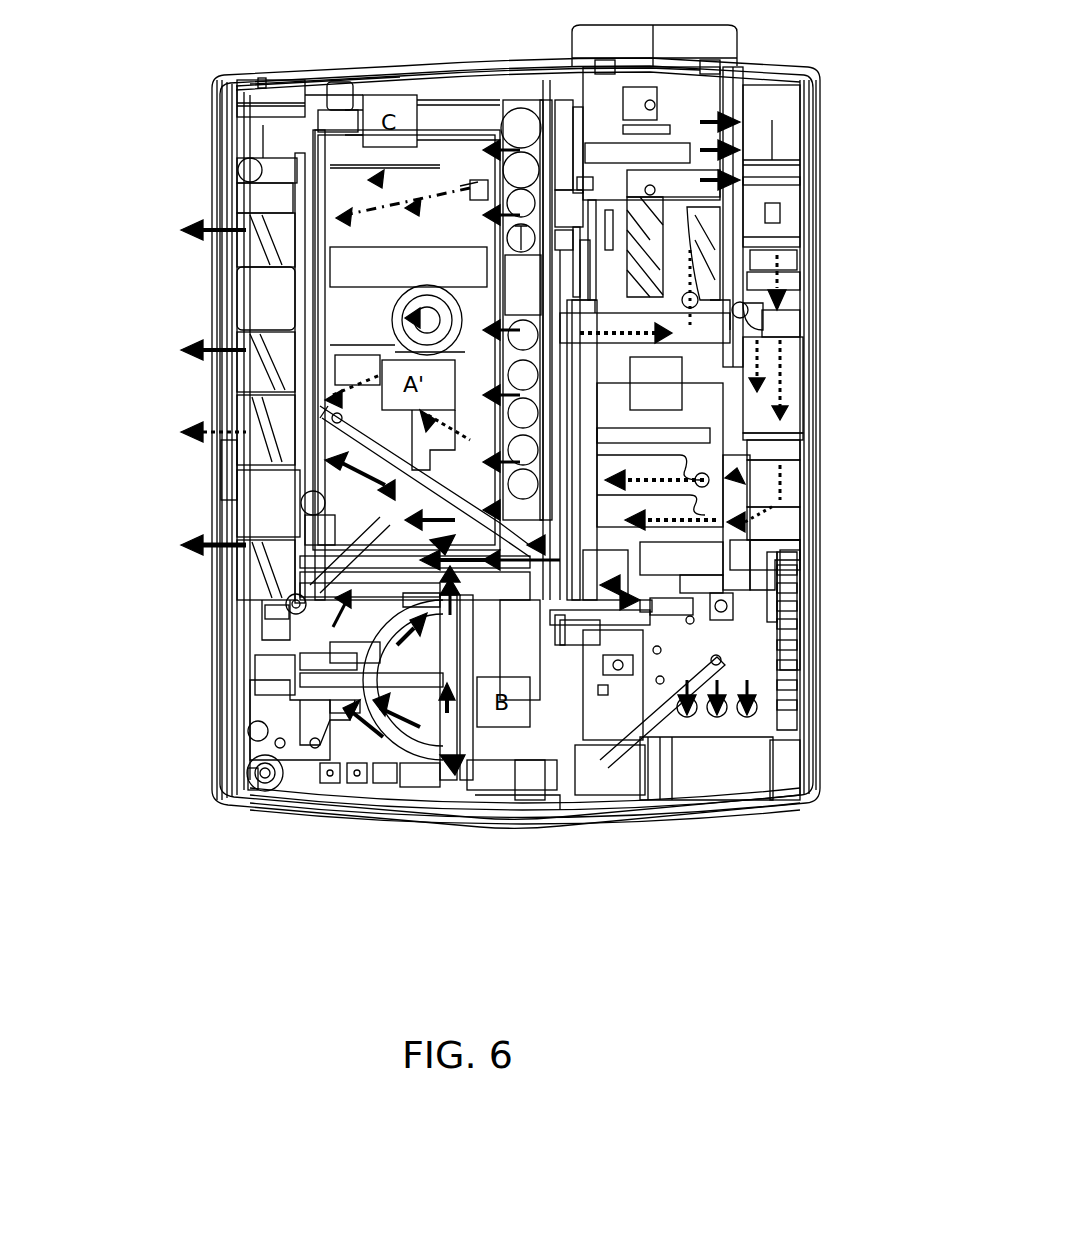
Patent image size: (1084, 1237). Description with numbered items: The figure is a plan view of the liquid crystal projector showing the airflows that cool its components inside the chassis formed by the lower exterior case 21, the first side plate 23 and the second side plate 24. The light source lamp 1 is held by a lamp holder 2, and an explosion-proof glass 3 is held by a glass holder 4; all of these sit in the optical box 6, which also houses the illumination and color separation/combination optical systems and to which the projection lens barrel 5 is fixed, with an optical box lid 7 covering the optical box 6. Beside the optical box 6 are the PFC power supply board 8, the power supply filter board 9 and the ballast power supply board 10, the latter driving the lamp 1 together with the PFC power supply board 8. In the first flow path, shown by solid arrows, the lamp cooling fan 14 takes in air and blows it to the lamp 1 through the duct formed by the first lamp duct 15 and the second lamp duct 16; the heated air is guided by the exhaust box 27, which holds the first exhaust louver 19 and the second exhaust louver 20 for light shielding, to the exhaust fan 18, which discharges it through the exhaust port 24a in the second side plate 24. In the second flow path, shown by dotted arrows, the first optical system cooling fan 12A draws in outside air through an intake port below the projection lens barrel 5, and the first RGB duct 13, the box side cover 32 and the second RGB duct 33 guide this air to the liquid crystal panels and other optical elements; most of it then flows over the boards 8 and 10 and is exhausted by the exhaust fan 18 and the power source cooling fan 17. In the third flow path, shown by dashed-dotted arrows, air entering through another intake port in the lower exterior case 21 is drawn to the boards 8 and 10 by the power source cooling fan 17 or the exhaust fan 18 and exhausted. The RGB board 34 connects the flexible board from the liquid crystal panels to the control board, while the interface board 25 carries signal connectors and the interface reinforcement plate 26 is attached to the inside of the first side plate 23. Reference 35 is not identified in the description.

The light source lamp 1 is at (335, 735).
The lamp holder 2 is at (350, 720).
The explosion-proof glass 3 is at (442, 752).
The glass holder 4 is at (440, 778).
The projection lens barrel 5 is at (690, 58).
The optical box 6 is at (770, 580).
The optical box lid 7 is at (680, 640).
The PFC power supply board 8 is at (345, 170).
The power supply filter board 9 is at (720, 660).
The ballast power supply board 10 is at (345, 170).
The first optical system cooling fan 12A is at (740, 172).
The first RGB duct 13 is at (763, 240).
The lamp cooling fan 14 is at (690, 760).
The first lamp duct 15 is at (540, 770).
The second lamp duct 16 is at (608, 785).
The power source cooling fan 17 is at (248, 296).
The exhaust fan 18 is at (246, 492).
The first exhaust louver 19 is at (330, 660).
The second exhaust louver 20 is at (295, 620).
The lower exterior case 21 is at (396, 54).
The first side plate 23 is at (805, 396).
The second side plate 24 is at (235, 735).
The exhaust port 24a is at (243, 470).
The interface board 25 is at (800, 634).
The interface reinforcement plate 26 is at (805, 532).
The exhaust box 27 is at (330, 440).
The box side cover 32 is at (790, 373).
The second RGB duct 33 is at (800, 301).
The RGB board 34 is at (700, 462).
The air outlet 35 is at (692, 502).